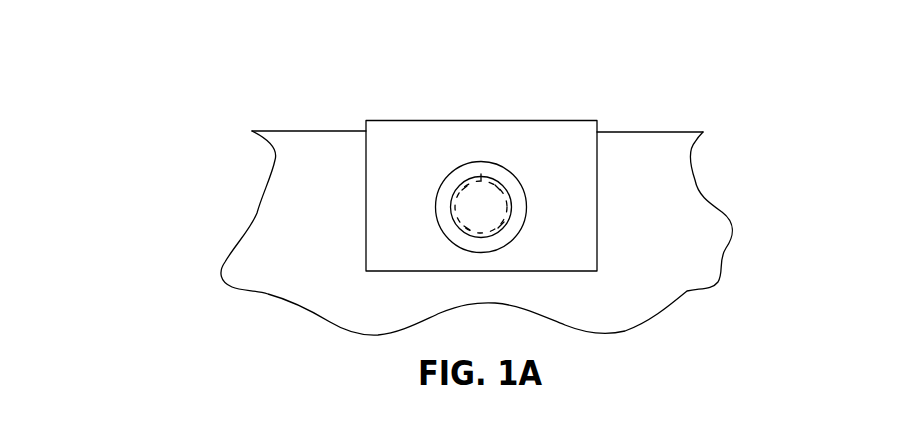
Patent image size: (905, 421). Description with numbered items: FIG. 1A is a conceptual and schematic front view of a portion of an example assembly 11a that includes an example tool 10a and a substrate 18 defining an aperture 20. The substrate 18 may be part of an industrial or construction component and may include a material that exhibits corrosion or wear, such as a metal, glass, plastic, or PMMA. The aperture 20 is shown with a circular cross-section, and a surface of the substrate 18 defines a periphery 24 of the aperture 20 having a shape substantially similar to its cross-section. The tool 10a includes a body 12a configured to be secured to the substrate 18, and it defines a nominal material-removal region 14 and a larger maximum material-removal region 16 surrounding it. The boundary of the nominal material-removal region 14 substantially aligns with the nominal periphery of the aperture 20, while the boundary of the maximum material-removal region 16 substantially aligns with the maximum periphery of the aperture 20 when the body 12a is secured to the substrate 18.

The assembly 11a is at (149, 54).
The tool 10a is at (427, 120).
The body 12a is at (497, 133).
The nominal material-removal region 14 is at (510, 200).
The maximum material-removal region 16 is at (485, 161).
The substrate 18 is at (672, 188).
The aperture 20 is at (480, 203).
The periphery 24 is at (517, 207).